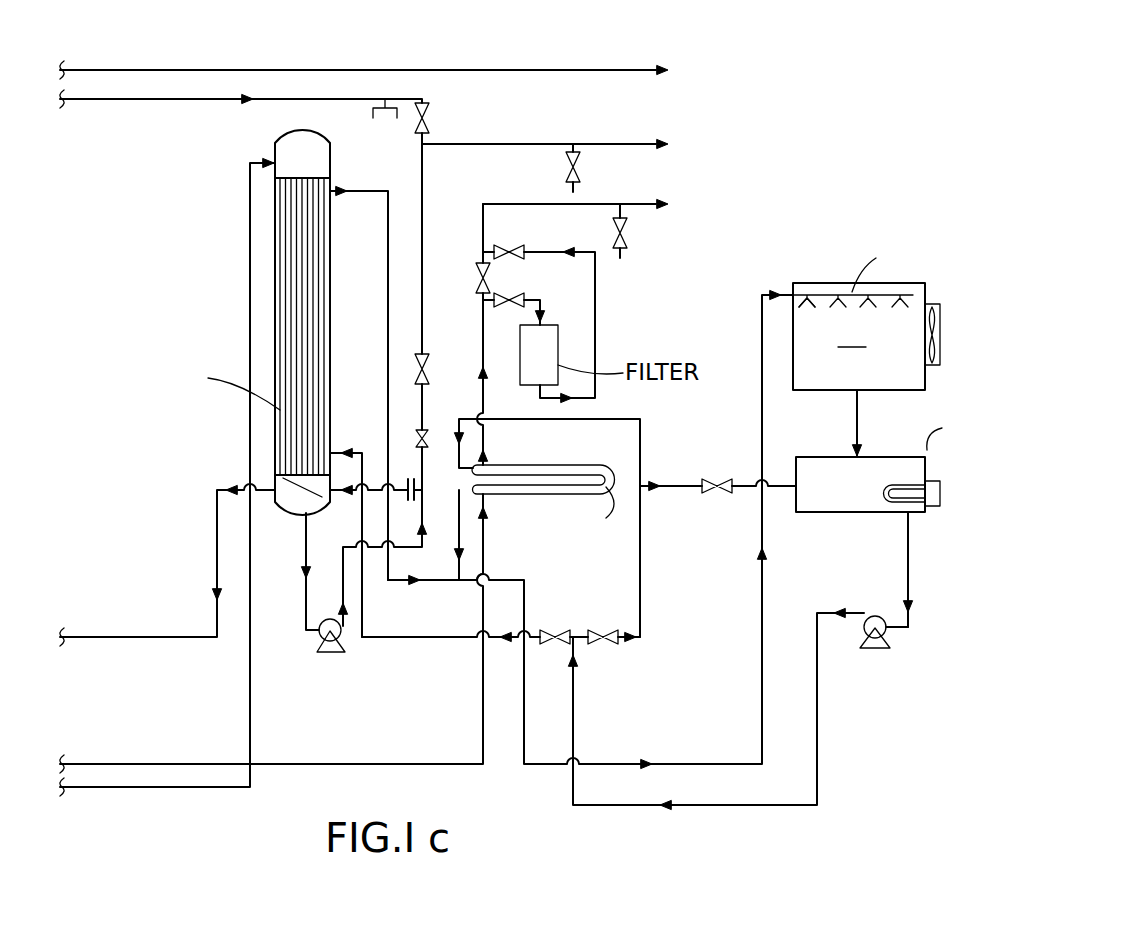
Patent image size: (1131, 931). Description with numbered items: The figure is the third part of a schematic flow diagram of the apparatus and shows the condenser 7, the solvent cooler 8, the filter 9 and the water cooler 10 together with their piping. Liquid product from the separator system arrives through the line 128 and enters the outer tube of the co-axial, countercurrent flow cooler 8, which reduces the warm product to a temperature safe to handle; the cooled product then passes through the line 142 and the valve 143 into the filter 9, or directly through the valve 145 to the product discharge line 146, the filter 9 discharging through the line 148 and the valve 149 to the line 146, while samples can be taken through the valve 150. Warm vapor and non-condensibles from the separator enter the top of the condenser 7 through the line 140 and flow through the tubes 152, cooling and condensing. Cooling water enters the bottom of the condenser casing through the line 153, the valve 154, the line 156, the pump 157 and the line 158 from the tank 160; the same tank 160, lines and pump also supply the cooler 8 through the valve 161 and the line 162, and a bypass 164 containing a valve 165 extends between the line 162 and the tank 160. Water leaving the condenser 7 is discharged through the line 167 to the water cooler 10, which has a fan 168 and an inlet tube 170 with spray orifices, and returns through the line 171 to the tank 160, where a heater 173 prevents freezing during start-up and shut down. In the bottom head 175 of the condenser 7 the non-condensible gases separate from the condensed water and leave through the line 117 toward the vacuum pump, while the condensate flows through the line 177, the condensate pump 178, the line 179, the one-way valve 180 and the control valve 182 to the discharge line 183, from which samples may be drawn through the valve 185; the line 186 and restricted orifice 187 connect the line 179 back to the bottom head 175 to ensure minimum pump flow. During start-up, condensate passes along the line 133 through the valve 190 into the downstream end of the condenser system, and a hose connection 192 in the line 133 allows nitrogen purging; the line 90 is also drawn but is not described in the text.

The condenser 7 is at (195, 333).
The solvent cooler 8 is at (604, 463).
The filter 9 is at (558, 327).
The water cooler 10 is at (883, 300).
The line 90 is at (125, 70).
The line 117 is at (98, 636).
The line 128 is at (128, 763).
The line 133 is at (100, 101).
The line 140 is at (248, 188).
The line 142 is at (483, 360).
The valve 143 is at (515, 297).
The valve 145 is at (482, 264).
The product discharge line 146 is at (636, 204).
The line 148 is at (596, 350).
The valve 149 is at (515, 249).
The valve 150 is at (628, 240).
The tubes 152 is at (300, 318).
The line 153 is at (418, 641).
The valve 154 is at (556, 629).
The line 156 is at (770, 806).
The pump 157 is at (878, 648).
The line 158 is at (909, 574).
The tank 160 is at (912, 466).
The valve 161 is at (605, 646).
The line 162 is at (641, 580).
The bypass 164 is at (672, 488).
The valve 165 is at (717, 478).
The line 167 is at (368, 192).
The fan 168 is at (942, 333).
The inlet tube 170 is at (826, 292).
The line 171 is at (857, 421).
The heater 173 is at (940, 505).
The bottom head 175 is at (288, 493).
The line 177 is at (307, 598).
The condensate pump 178 is at (330, 652).
The line 179 is at (342, 575).
The one-way valve 180 is at (418, 432).
The control valve 182 is at (418, 360).
The discharge line 183 is at (495, 143).
The valve 185 is at (581, 166).
The line 186 is at (366, 488).
The restricted orifice 187 is at (395, 581).
The valve 190 is at (431, 115).
The hose connection 192 is at (385, 112).